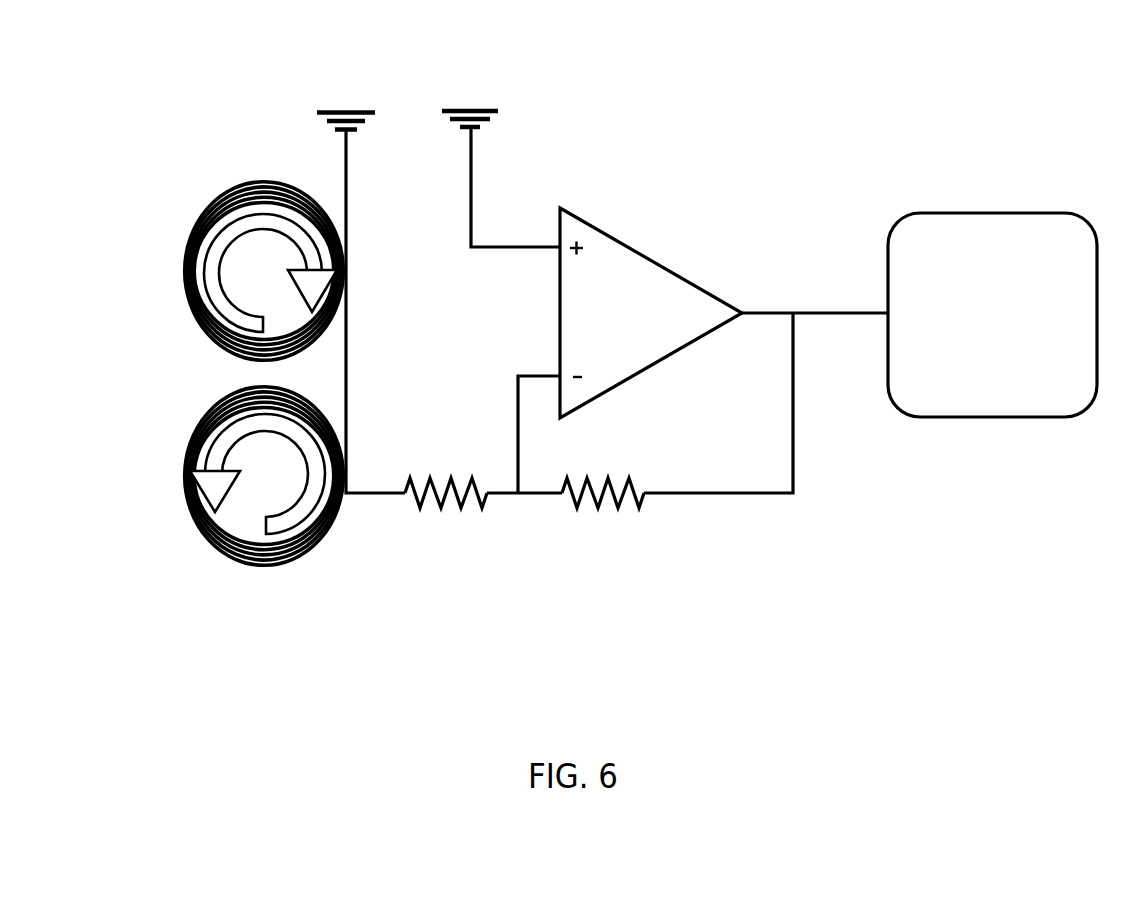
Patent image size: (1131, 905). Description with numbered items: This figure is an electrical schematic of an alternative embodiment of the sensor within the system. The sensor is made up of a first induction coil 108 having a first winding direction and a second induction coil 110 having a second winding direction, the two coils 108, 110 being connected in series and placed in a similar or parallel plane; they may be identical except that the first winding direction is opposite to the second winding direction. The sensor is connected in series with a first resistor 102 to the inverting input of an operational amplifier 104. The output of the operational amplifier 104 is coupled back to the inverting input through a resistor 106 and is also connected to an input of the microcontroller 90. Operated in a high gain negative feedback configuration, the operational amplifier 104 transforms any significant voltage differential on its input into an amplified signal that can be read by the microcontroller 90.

The microcontroller 90 is at (978, 212).
The first resistor 102 is at (437, 510).
The operational amplifier 104 is at (632, 248).
The resistor 106 is at (597, 512).
The first induction coil 108 is at (206, 344).
The second induction coil 110 is at (226, 559).